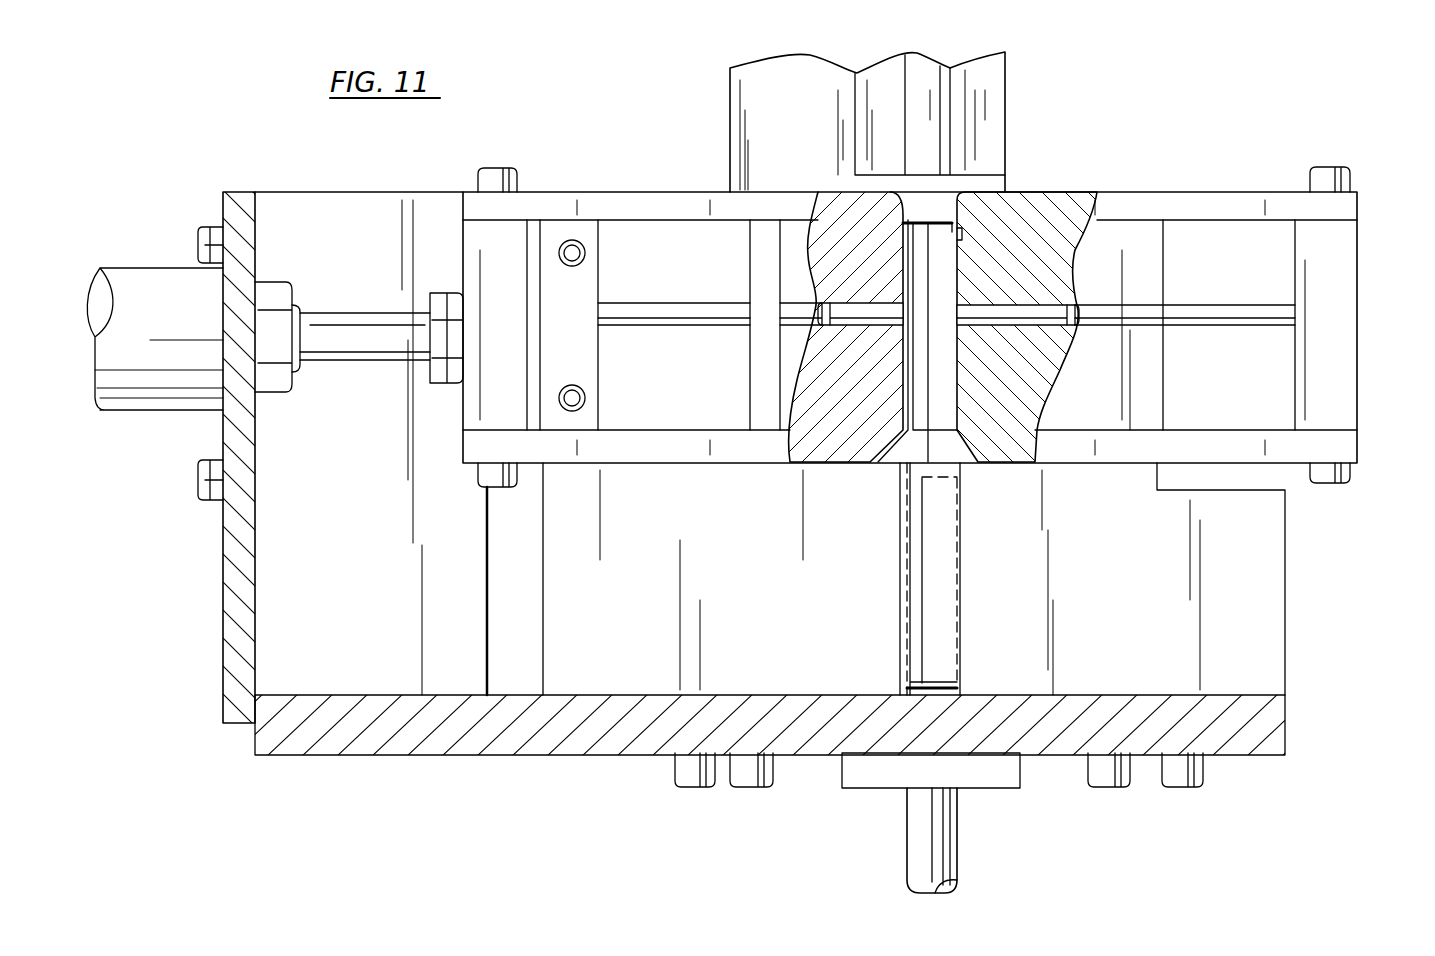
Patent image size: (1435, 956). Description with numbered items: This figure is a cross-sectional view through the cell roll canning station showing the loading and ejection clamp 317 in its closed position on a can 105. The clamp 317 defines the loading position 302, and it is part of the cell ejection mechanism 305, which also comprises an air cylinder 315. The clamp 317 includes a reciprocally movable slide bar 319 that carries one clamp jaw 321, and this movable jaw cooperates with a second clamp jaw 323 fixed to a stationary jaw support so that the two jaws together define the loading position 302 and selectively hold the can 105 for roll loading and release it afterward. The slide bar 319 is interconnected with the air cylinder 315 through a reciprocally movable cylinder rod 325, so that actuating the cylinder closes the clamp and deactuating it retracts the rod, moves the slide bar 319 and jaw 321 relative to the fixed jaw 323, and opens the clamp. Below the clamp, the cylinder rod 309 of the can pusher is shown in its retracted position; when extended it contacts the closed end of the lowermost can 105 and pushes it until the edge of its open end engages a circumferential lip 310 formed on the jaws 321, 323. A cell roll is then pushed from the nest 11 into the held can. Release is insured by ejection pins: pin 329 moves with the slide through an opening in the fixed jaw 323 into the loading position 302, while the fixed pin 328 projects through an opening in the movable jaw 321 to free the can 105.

The nest 11 is at (993, 102).
The cell ejection mechanism 305 is at (158, 256).
The air cylinder 315 is at (148, 398).
The loading and ejection clamp 317 is at (683, 172).
The slide bar 319 is at (478, 252).
The cylinder rod 325 is at (375, 355).
The ejection pin 328 is at (688, 320).
The pin 329 is at (1243, 317).
The circumferential lip 310 is at (957, 237).
The loading position 302 is at (943, 378).
The clamp jaw 321 is at (832, 447).
The second clamp jaw 323 is at (1010, 455).
The can 105 is at (943, 593).
The cylinder rod 309 is at (947, 842).